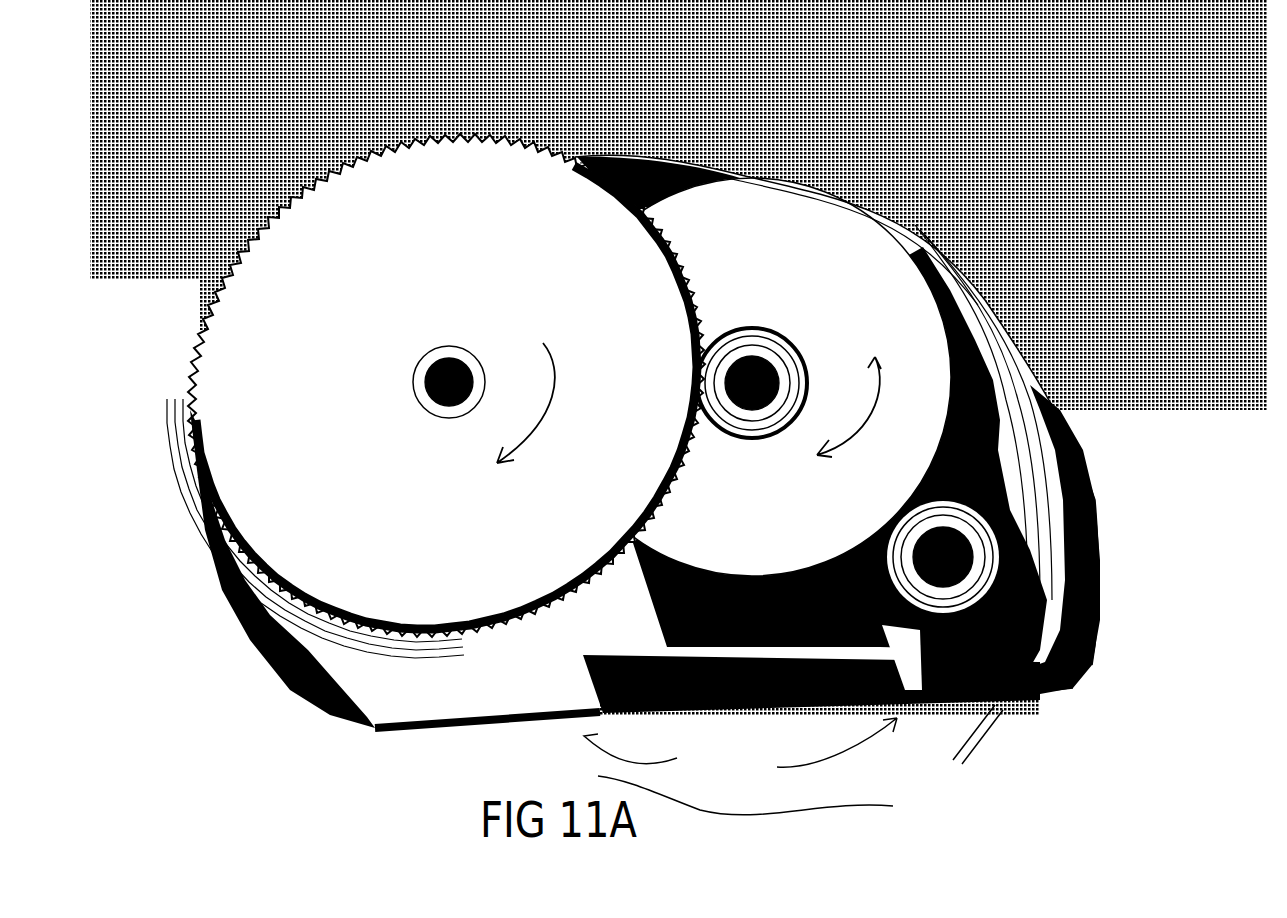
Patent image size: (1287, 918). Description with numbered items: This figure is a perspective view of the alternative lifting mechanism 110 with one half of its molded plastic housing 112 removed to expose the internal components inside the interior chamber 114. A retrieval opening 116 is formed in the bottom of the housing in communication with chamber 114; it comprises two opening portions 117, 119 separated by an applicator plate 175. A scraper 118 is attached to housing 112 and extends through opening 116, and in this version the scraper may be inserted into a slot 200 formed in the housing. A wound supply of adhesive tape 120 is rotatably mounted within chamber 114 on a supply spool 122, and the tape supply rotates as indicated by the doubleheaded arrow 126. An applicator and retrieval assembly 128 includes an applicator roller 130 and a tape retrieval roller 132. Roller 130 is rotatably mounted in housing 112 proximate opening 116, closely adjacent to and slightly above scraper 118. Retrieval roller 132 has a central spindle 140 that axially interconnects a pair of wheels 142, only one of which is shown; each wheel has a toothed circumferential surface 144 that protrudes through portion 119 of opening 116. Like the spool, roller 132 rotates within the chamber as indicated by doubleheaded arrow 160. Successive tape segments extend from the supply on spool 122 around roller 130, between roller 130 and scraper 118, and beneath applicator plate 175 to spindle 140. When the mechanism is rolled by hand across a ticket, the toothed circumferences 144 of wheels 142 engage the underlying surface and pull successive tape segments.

The mechanism 110 is at (177, 276).
The housing 112 is at (1103, 527).
The interior chamber 114 is at (1078, 413).
The retrieval opening 116 is at (907, 673).
The opening portion 117 is at (1037, 690).
The scraper 118 is at (997, 715).
The opening portion 119 is at (378, 730).
The adhesive tape 120 is at (915, 298).
The supply spool 122 is at (782, 326).
The doubleheaded arrow 126 is at (872, 418).
The applicator and retrieval assembly 128 is at (740, 774).
The applicator roller 130 is at (978, 534).
The tape retrieval roller 132 is at (300, 223).
The central spindle 140 is at (412, 366).
The wheels 142 is at (438, 633).
The toothed circumferential surface 144 is at (436, 134).
The doubleheaded arrow 160 is at (550, 400).
The applicator plate 175 is at (743, 708).
The slot 200 is at (1110, 598).